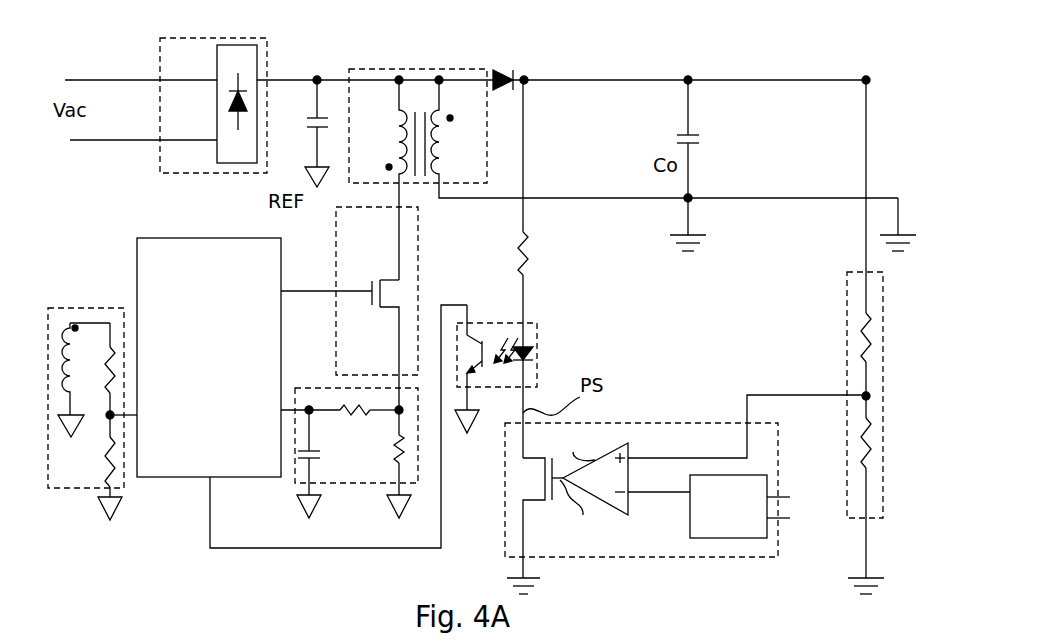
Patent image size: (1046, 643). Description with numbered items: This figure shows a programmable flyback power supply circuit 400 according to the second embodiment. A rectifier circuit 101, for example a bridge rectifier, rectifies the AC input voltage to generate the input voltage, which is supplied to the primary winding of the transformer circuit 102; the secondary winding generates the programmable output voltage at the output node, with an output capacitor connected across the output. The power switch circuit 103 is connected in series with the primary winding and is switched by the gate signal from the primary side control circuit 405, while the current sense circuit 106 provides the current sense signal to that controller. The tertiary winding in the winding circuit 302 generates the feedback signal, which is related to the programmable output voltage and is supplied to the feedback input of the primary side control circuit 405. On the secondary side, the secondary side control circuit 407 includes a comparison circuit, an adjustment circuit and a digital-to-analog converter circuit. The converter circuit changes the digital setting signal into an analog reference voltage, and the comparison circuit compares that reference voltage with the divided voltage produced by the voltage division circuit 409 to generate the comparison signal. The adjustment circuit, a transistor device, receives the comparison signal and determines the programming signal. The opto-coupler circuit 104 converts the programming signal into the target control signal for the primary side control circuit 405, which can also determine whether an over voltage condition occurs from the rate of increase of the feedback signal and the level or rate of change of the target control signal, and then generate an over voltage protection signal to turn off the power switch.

The programmable flyback power supply circuit 400 is at (848, 41).
The rectifier circuit 101 is at (197, 165).
The transformer circuit 102 is at (428, 69).
The power switch circuit 103 is at (379, 238).
The opto-coupler circuit 104 is at (507, 322).
The current sense circuit 106 is at (330, 387).
The tertiary winding circuit 302 is at (62, 308).
The primary side control circuit 405 is at (180, 268).
The secondary side control circuit 407 is at (617, 557).
The voltage division circuit 409 is at (847, 338).